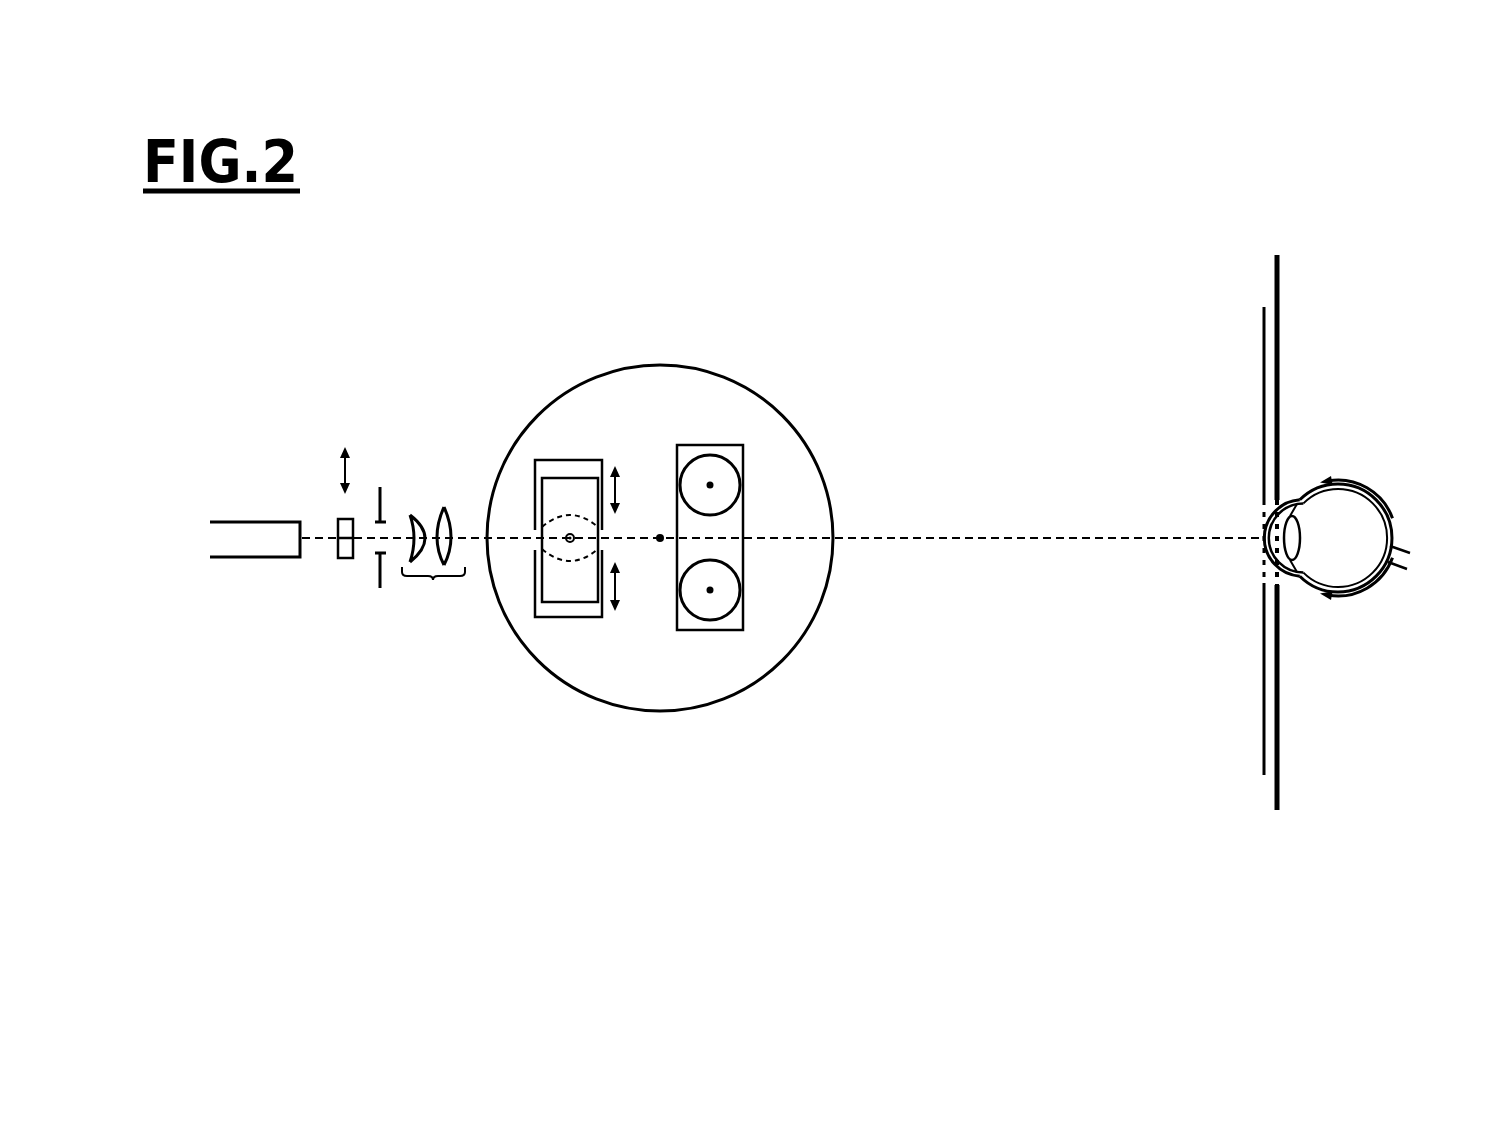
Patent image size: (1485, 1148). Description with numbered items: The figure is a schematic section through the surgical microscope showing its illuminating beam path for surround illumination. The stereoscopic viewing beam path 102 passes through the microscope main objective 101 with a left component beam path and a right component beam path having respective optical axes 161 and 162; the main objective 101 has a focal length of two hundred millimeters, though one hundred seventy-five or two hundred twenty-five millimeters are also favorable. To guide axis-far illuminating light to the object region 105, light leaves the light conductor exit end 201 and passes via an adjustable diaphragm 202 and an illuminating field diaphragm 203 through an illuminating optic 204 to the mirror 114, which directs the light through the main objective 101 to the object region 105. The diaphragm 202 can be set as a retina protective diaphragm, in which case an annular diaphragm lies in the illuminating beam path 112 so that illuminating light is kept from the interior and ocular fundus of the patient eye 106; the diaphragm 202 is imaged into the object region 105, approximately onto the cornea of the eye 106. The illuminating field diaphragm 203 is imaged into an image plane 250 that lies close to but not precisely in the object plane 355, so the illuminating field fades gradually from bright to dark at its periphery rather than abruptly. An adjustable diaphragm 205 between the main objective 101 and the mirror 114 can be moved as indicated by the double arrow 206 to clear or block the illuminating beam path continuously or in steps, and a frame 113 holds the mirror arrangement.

The microscope main objective 101 is at (800, 492).
The stereoscopic viewing beam path 102 is at (727, 476).
The object region 105 is at (1246, 512).
The patient eye 106 is at (1366, 492).
The illuminating beam path 112 is at (470, 541).
The mirror holding frame 113 is at (733, 552).
The mirror 114 is at (576, 541).
The optical axis 161 is at (710, 590).
The optical axis 162 is at (710, 485).
The light conductor exit end 201 is at (302, 555).
The adjustable diaphragm 202 is at (349, 559).
The illuminating field diaphragm 203 is at (382, 487).
The illuminating optic 204 is at (433, 580).
The adjustable diaphragm 205 is at (567, 468).
The double arrow 206 is at (620, 493).
The image plane 250 is at (1280, 418).
The object plane 355 is at (1262, 340).